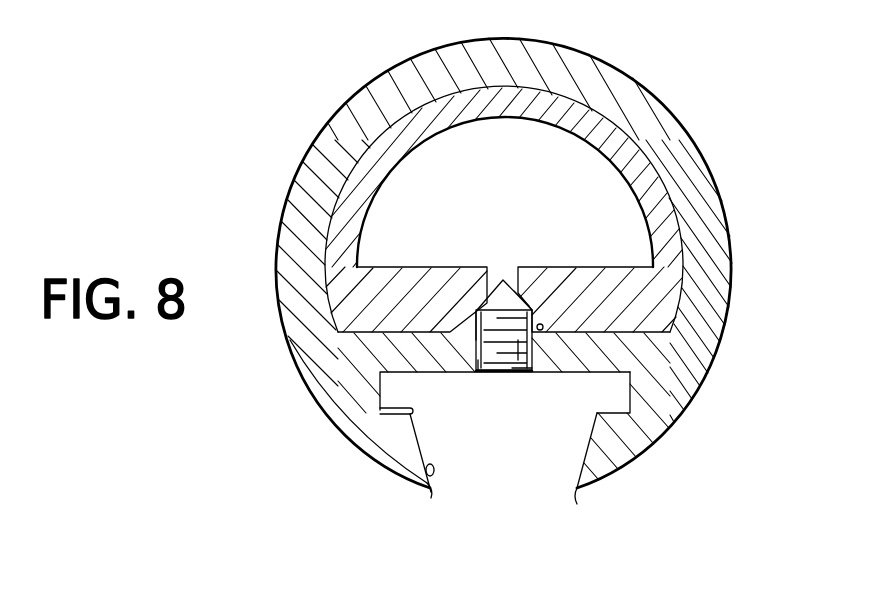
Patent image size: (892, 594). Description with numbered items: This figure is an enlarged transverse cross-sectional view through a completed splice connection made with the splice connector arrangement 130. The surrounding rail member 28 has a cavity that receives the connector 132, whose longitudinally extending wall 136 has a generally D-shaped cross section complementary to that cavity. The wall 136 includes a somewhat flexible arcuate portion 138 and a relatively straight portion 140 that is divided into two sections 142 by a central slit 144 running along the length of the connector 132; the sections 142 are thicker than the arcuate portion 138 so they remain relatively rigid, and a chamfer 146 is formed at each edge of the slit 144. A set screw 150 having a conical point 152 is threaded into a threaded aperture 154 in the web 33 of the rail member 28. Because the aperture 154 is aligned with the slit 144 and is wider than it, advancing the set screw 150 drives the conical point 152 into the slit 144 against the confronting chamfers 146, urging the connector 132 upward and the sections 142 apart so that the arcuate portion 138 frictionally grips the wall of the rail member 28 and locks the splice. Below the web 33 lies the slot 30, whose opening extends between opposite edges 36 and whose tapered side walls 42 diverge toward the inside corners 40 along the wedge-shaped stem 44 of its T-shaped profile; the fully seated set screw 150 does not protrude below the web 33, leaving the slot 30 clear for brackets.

The rail member 28 is at (378, 76).
The slot 30 is at (551, 382).
The web 33 is at (587, 364).
The edges 36 is at (432, 496).
The inside corner 40 is at (380, 409).
The side walls 42 is at (428, 476).
The stem 44 is at (485, 473).
The splice connector arrangement 130 is at (280, 188).
The connector 132 is at (548, 86).
The longitudinally extending wall 136 is at (663, 242).
The arcuate portion 138 is at (463, 124).
The straight portion 140 is at (660, 347).
The sections 142 is at (390, 278).
The central slit 144 is at (500, 272).
The chamfer 146 is at (541, 323).
The set screw 150 is at (483, 373).
The conical point 152 is at (505, 279).
The threaded aperture 154 is at (524, 373).